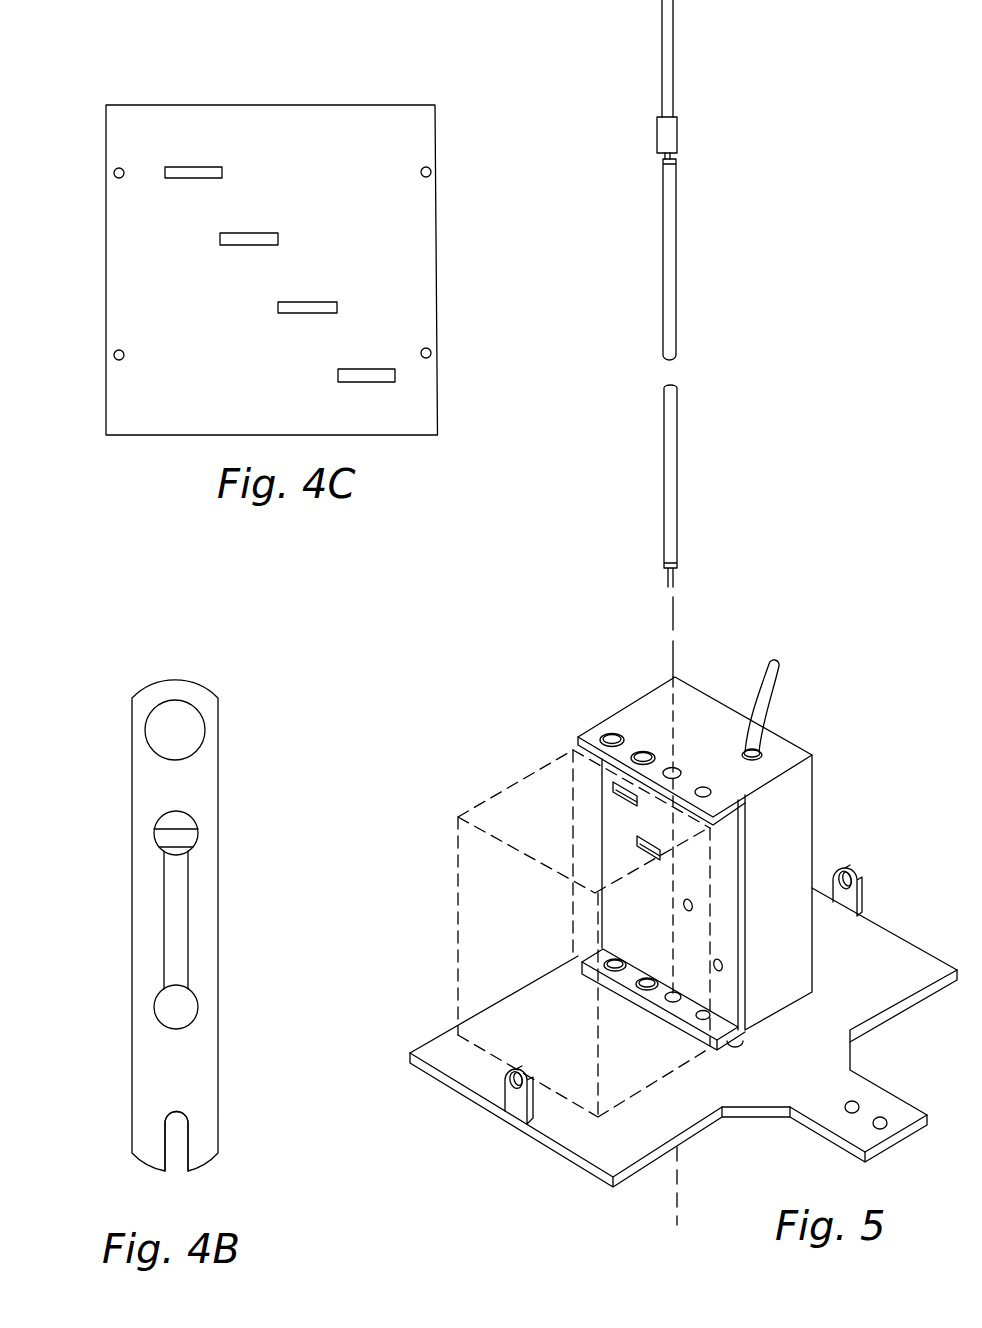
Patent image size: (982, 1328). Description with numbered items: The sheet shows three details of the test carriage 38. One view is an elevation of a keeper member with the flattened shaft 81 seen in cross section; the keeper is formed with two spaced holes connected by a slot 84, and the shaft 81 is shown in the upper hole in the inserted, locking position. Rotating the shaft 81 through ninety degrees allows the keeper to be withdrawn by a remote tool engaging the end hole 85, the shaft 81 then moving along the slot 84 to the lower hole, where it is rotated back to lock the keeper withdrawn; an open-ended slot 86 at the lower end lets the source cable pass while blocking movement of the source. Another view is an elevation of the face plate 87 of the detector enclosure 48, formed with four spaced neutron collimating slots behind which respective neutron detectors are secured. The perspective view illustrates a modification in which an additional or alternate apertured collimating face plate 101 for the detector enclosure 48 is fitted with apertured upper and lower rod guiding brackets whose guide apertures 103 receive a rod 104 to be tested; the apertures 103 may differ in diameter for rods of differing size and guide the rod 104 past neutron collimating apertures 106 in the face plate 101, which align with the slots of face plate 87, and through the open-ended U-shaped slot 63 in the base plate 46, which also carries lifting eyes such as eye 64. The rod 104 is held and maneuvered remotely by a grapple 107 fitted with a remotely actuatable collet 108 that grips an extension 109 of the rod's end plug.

In FIG. 4C, the face plate 87 is at (438, 223).
In FIG. 4B, the flattened shaft 81 is at (192, 850).
In FIG. 4B, the slot 84 is at (163, 910).
In FIG. 4B, the end hole 85 is at (202, 712).
In FIG. 4B, the open-ended slot 86 is at (177, 1166).
In FIG. 5, the carriage 38 is at (488, 780).
In FIG. 5, the base plate 46 is at (922, 1003).
In FIG. 5, the detector enclosure 48 is at (726, 862).
In FIG. 5, the U-shaped slot 63 is at (735, 1047).
In FIG. 5, the lifting eye 64 is at (510, 1098).
In FIG. 5, the apertured collimating face plate 101 is at (750, 963).
In FIG. 5, the guide apertures 103 is at (675, 770).
In FIG. 5, the rod 104 is at (675, 463).
In FIG. 5, the neutron collimating apertures 106 is at (691, 900).
In FIG. 5, the grapple 107 is at (675, 28).
In FIG. 5, the remotely actuatable collet 108 is at (678, 132).
In FIG. 5, the extension 109 is at (670, 156).